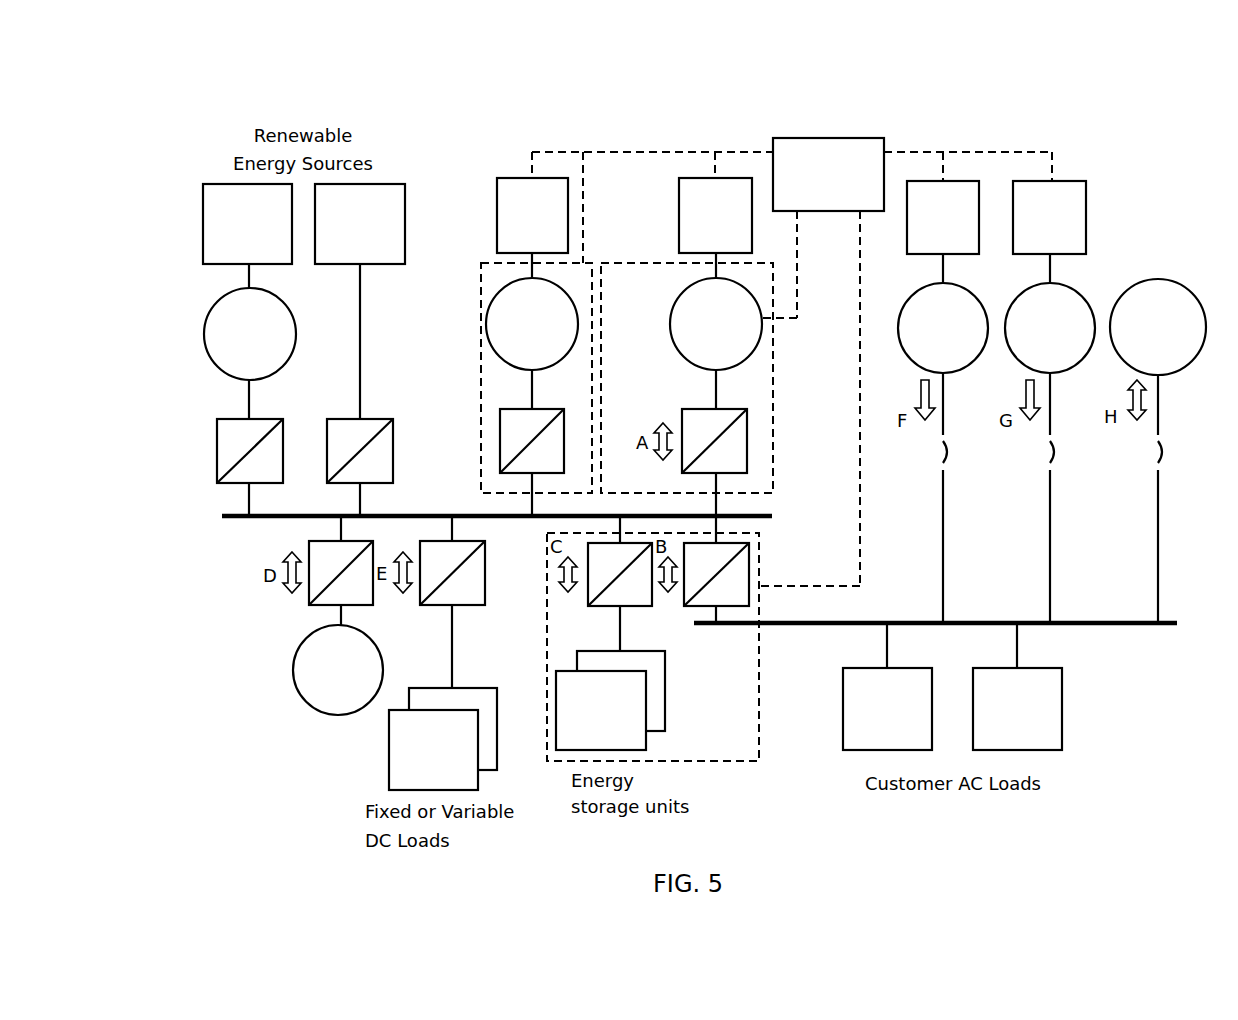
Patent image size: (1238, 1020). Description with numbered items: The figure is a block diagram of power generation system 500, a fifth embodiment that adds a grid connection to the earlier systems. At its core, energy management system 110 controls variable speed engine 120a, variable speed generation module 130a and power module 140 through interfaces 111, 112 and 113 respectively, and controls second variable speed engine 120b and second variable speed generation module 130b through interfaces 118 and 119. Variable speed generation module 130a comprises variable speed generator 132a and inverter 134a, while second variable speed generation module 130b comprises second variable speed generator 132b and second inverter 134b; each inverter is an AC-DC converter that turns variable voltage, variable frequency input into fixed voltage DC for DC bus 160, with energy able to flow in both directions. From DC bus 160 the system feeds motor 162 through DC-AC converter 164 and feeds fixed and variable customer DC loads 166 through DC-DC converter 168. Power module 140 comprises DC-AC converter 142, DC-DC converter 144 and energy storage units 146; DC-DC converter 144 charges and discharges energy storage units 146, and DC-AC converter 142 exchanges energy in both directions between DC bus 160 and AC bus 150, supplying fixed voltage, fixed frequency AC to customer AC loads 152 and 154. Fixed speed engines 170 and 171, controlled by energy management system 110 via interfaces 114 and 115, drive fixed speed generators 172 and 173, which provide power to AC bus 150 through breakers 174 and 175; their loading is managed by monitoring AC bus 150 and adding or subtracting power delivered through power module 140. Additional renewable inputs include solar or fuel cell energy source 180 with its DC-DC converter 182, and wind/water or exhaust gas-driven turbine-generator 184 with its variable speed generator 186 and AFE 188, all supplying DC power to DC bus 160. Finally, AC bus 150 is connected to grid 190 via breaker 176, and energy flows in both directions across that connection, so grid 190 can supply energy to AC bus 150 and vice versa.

The power generation system 500 is at (173, 125).
The energy management system 110 is at (830, 138).
The interface 111 is at (713, 170).
The interface 112 is at (797, 296).
The interface 113 is at (860, 330).
The interface 114 is at (941, 175).
The interface 115 is at (1052, 172).
The interface 118 is at (530, 166).
The interface 119 is at (580, 166).
The variable speed engine 120a is at (679, 200).
The second variable speed engine 120b is at (497, 197).
The variable speed generation module 130a is at (636, 263).
The second variable speed generation module 130b is at (482, 263).
The variable speed generator 132a is at (672, 305).
The second variable speed generator 132b is at (488, 306).
The inverter 134a is at (747, 452).
The second inverter 134b is at (500, 470).
The power module 140 is at (759, 733).
The DC-AC converter 142 is at (749, 557).
The DC-DC converter 144 is at (588, 600).
The energy storage units 146 is at (556, 681).
The AC bus 150 is at (1080, 623).
The customer AC load 152 is at (843, 686).
The customer AC load 154 is at (1062, 686).
The DC bus 160 is at (222, 516).
The motor 162 is at (300, 652).
The DC-AC converter 164 is at (309, 549).
The customer DC loads 166 is at (389, 746).
The DC-DC converter 168 is at (485, 555).
The fixed speed engine 170 is at (960, 181).
The fixed speed engine 171 is at (1086, 205).
The fixed speed generator 172 is at (904, 354).
The fixed speed generator 173 is at (1089, 308).
The breaker 174 is at (951, 461).
The breaker 175 is at (1058, 458).
The breaker 176 is at (1163, 456).
The solar or fuel cell energy source 180 is at (397, 268).
The DC-DC converter 182 is at (393, 430).
The wind/water or exhaust gas-driven turbine-generator 184 is at (203, 205).
The variable speed generator 186 is at (206, 319).
The AFE 188 is at (217, 440).
The grid 190 is at (1158, 278).